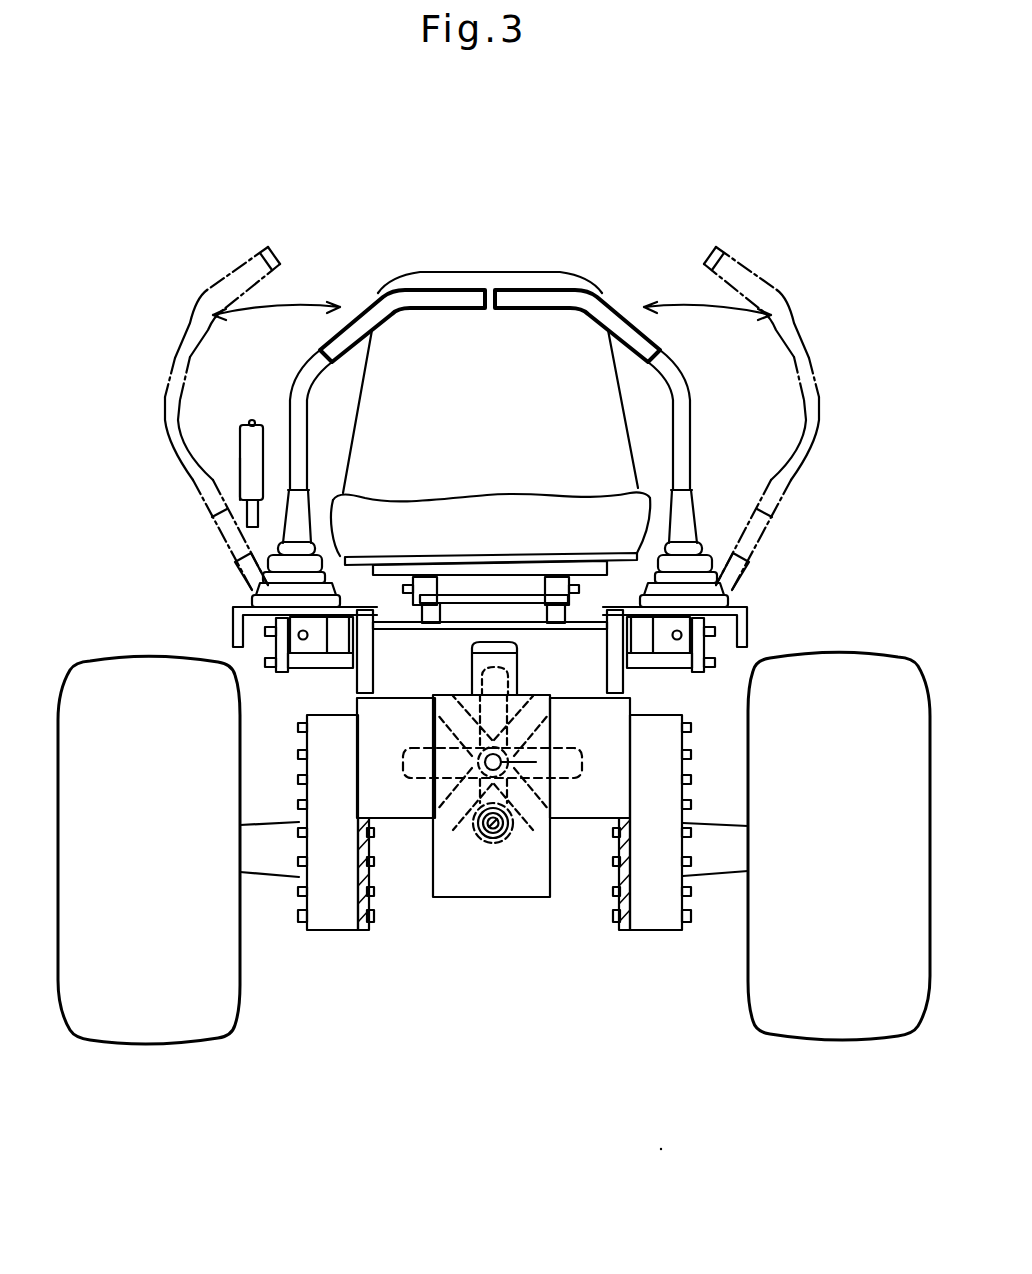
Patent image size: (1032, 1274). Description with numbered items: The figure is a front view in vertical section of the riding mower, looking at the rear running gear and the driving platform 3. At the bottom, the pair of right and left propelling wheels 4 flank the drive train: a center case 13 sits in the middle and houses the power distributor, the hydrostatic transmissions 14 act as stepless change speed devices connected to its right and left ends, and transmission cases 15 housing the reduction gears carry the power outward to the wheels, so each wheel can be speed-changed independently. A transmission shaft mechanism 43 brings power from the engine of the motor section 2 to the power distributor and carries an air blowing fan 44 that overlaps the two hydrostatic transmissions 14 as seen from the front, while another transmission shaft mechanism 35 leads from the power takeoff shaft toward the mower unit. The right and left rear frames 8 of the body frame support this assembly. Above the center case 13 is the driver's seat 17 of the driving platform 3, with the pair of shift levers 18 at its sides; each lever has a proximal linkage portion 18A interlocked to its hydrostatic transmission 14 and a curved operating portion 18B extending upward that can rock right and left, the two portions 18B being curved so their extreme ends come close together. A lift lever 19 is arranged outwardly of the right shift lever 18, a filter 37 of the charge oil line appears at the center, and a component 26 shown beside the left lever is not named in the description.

The motor section 2 is at (335, 972).
The driving platform 3 is at (616, 247).
The propelling wheels 4 is at (176, 1043).
The rear frames 8 is at (362, 930).
The center case 13 is at (517, 897).
The hydrostatic transmissions 14 is at (405, 820).
The transmission cases 15 is at (312, 926).
The driver's seat 17 is at (490, 272).
The shift levers 18 is at (160, 390).
The proximal linkage portion 18A is at (315, 642).
The operating portion 18B is at (305, 450).
The lift lever 19 is at (240, 457).
The damper 26 is at (252, 420).
The transmission shaft mechanism 35 is at (482, 840).
The filter 37 is at (520, 660).
The transmission shaft mechanism 43 is at (547, 735).
The air blowing fan 44 is at (433, 698).